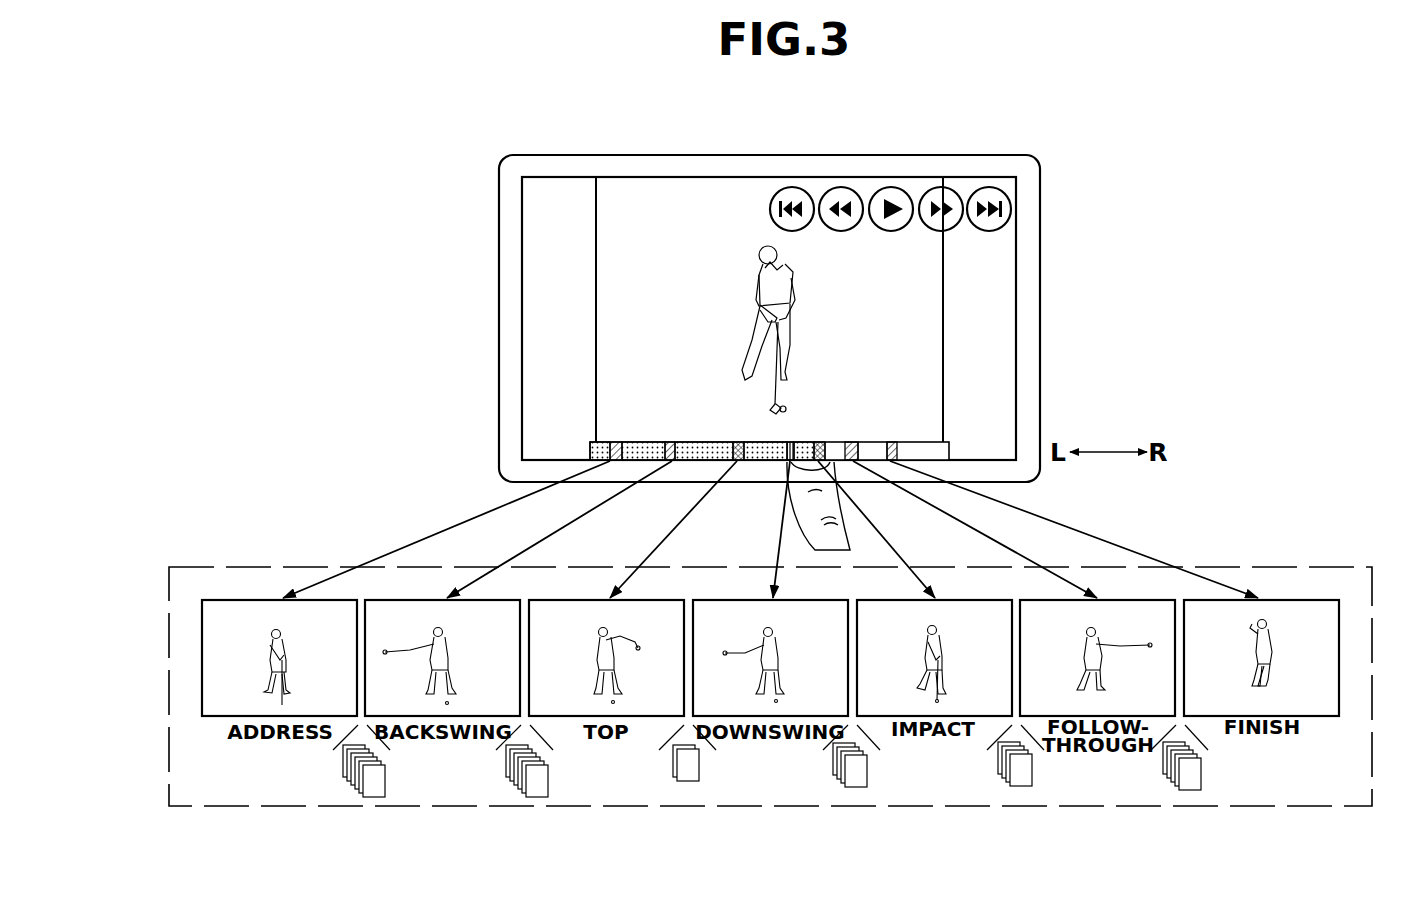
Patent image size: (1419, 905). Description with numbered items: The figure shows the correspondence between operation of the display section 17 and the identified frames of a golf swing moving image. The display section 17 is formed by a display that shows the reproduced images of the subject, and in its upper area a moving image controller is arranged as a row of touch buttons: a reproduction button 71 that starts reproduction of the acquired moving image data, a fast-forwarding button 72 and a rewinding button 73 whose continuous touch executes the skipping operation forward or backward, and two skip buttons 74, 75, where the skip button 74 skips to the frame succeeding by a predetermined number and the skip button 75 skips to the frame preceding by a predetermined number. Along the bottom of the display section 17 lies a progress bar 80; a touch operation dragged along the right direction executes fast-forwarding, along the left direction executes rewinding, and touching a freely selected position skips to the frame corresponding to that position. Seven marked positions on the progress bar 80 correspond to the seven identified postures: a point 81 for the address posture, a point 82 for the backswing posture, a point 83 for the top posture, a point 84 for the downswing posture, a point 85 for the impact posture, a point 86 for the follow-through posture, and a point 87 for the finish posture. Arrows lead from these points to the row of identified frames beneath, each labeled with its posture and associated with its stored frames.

The display section 17 is at (662, 193).
The reproduction button 71 is at (888, 187).
The fast-forwarding button 72 is at (936, 187).
The rewinding button 73 is at (838, 187).
The skip button 74 is at (985, 187).
The skip button 75 is at (789, 187).
The progress bar 80 is at (947, 450).
The point 81 is at (612, 442).
The point 82 is at (668, 442).
The point 83 is at (736, 442).
The point 84 is at (792, 442).
The point 85 is at (820, 442).
The point 86 is at (852, 442).
The point 87 is at (892, 442).